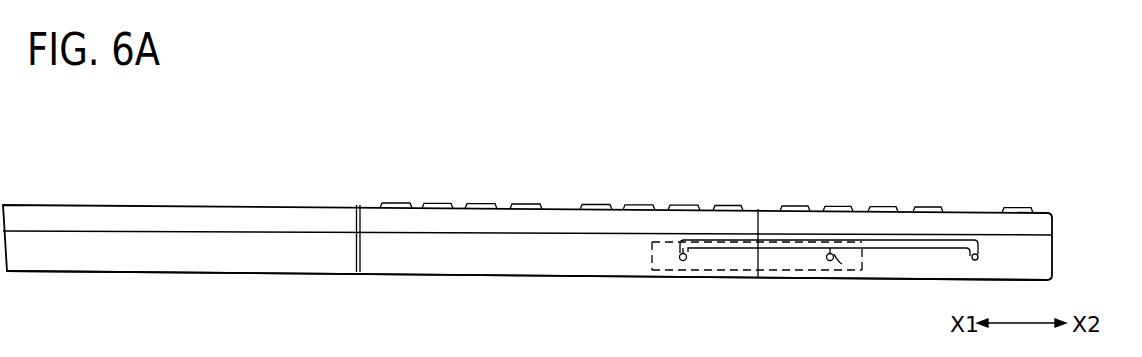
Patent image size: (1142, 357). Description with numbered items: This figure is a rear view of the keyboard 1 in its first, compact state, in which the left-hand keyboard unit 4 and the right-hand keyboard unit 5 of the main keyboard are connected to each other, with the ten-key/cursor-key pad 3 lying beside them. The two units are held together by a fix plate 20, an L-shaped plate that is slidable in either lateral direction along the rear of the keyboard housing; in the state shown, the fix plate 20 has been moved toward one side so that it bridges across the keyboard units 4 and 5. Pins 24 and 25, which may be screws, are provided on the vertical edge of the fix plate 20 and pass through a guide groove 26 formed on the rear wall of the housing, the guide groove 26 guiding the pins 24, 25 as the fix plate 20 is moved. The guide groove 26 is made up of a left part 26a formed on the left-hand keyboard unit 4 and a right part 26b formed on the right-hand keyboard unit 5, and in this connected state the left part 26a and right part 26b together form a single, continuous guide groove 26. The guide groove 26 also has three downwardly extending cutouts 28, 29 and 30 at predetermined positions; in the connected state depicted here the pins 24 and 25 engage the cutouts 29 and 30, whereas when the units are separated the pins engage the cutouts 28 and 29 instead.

The keyboard 1 is at (628, 125).
The ten-key/cursor-key pad 3 is at (183, 206).
The left-hand keyboard unit 4 is at (947, 211).
The right-hand keyboard unit 5 is at (479, 274).
The fix plate 20 is at (866, 257).
The pin 24 is at (826, 261).
The pin 25 is at (680, 262).
The guide groove 26 is at (829, 196).
The left part of guide groove 26a is at (784, 246).
The right part of guide groove 26b is at (731, 246).
The cutout 28 is at (978, 260).
The cutout 29 is at (842, 264).
The cutout 30 is at (688, 262).